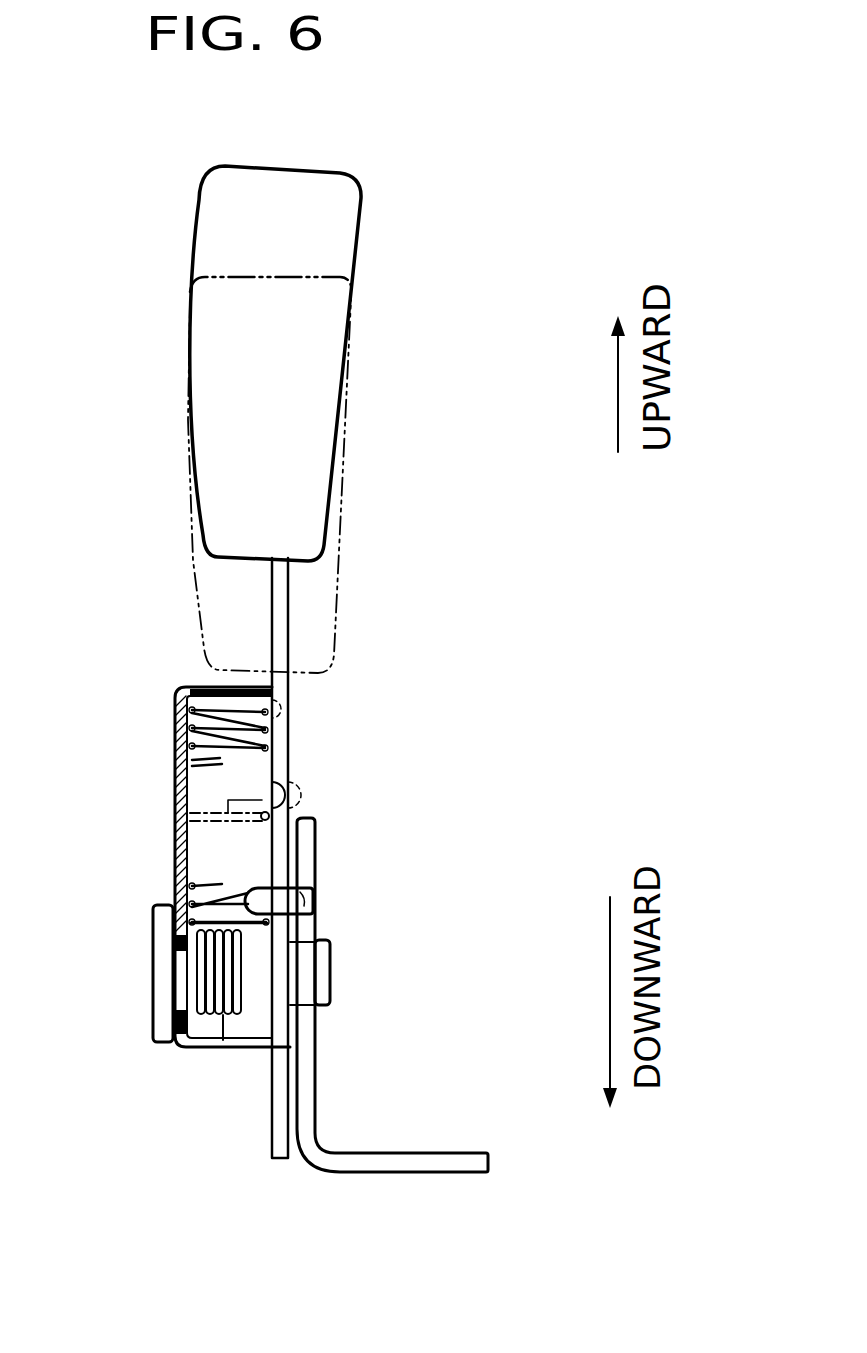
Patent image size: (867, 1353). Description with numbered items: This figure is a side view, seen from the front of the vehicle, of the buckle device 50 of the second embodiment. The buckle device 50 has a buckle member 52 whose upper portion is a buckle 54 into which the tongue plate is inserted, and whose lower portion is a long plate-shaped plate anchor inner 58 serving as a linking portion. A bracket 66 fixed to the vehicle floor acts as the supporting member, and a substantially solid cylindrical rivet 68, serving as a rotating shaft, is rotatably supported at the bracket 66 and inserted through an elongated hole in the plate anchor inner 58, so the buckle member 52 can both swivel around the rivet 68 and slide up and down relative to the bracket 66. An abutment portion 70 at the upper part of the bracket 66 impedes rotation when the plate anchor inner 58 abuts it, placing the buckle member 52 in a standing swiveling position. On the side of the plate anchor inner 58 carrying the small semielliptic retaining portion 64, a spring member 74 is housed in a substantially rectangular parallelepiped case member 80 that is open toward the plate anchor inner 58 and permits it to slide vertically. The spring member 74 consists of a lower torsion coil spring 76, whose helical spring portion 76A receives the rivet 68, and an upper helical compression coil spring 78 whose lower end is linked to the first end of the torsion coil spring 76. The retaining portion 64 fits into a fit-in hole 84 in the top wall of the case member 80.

The buckle device 50 is at (106, 246).
The buckle member 52 is at (364, 238).
The buckle 54 is at (353, 278).
The plate anchor inner 58 is at (290, 605).
The retaining portion 64 is at (265, 726).
The bracket 66 is at (316, 1113).
The rivet 68 is at (331, 982).
The abutment portion 70 is at (315, 889).
The spring member 74 is at (172, 736).
The torsion coil spring 76 is at (197, 973).
The spring portion 76A is at (223, 1040).
The compression coil spring 78 is at (177, 768).
The case member 80 is at (178, 808).
The fit-in hole 84 is at (220, 688).